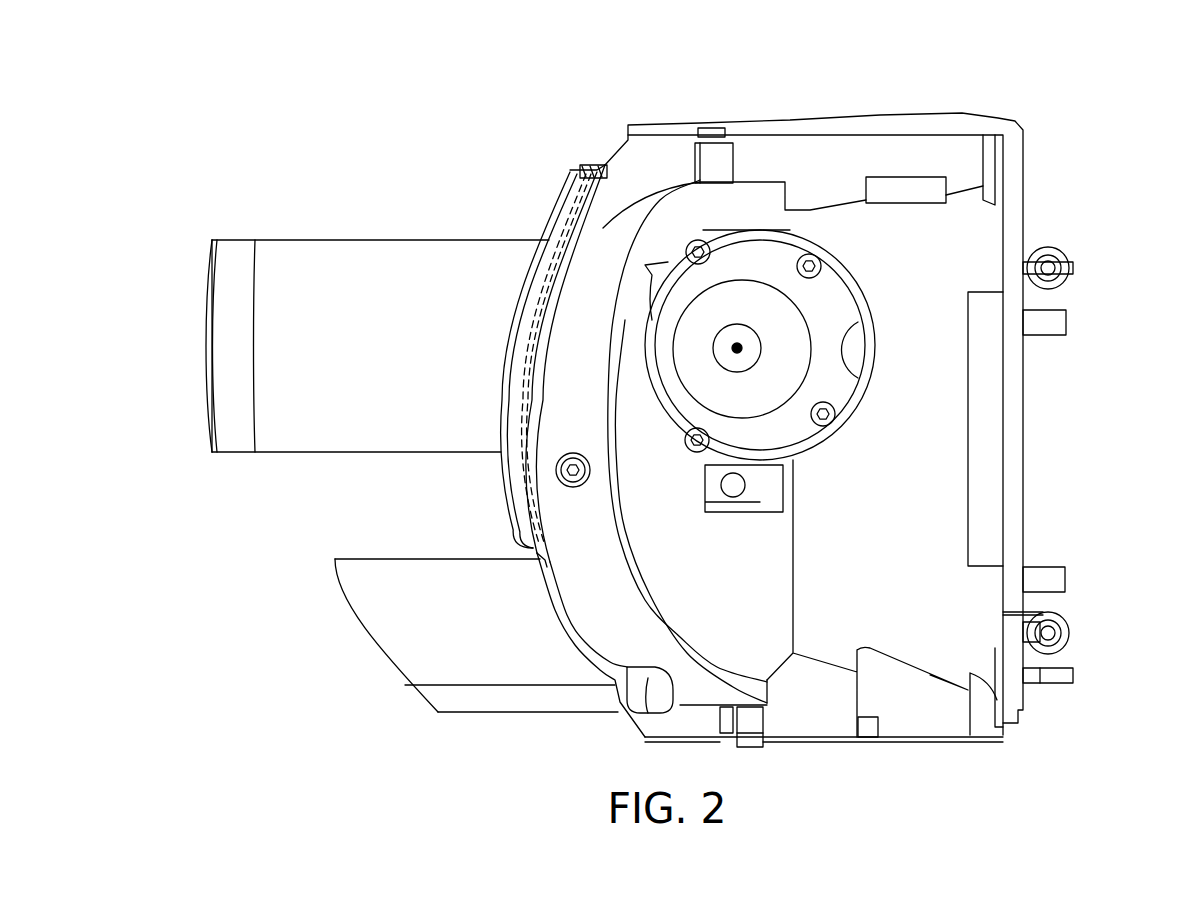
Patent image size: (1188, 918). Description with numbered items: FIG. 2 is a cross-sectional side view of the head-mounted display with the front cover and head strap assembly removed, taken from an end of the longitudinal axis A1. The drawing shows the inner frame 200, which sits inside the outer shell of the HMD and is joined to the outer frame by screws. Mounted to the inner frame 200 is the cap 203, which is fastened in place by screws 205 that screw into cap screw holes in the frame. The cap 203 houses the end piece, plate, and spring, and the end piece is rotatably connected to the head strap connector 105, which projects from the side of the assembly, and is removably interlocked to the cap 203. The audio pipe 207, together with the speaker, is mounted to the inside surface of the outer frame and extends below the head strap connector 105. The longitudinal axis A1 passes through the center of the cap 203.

The head strap connector 105 is at (338, 312).
The inner frame 200 is at (618, 188).
The cap 203 is at (828, 318).
The screws 205 is at (698, 432).
The audio pipe 207 is at (437, 633).
The longitudinal axis A1 is at (737, 348).